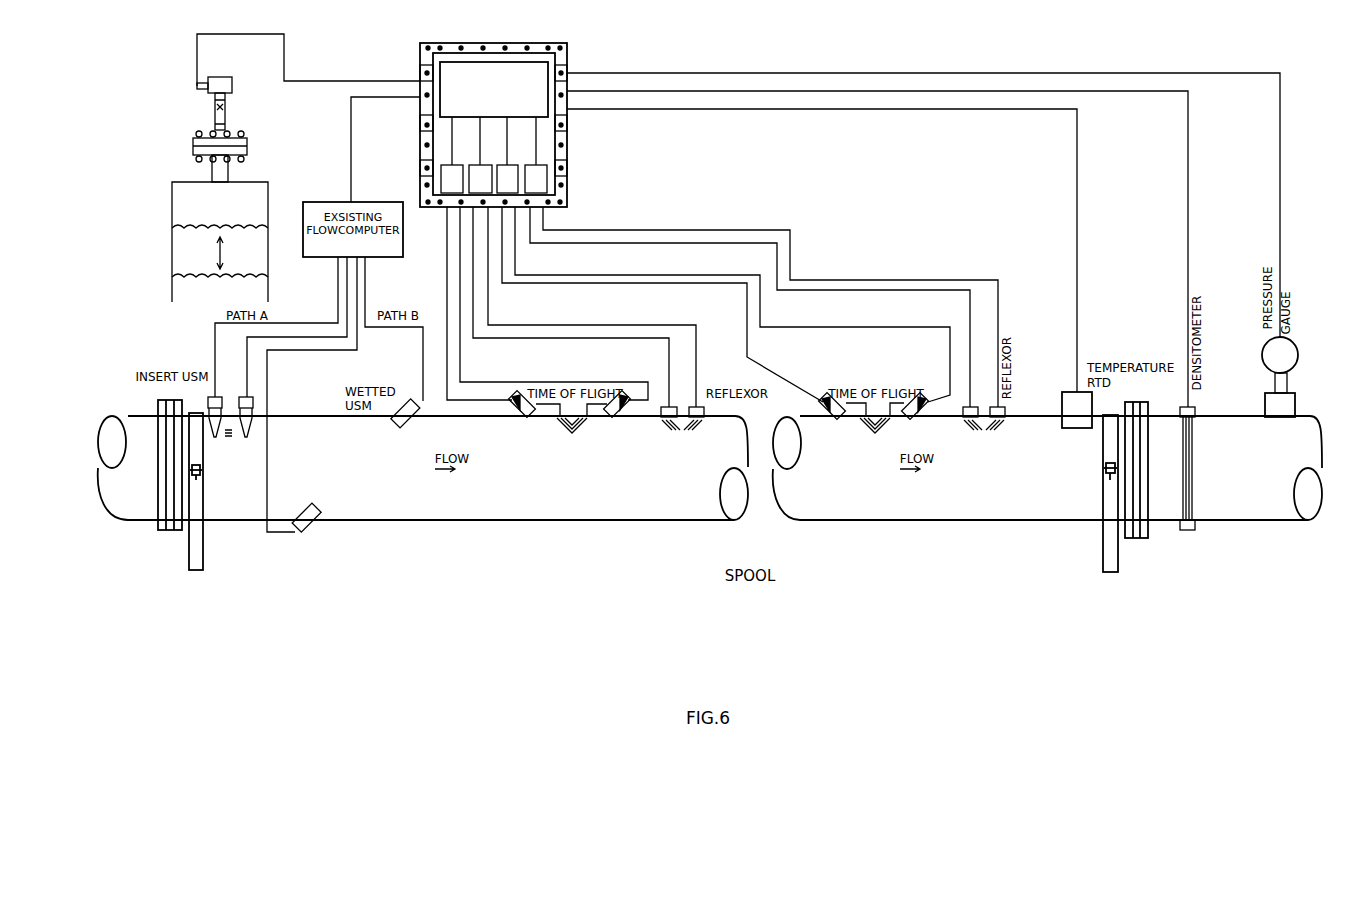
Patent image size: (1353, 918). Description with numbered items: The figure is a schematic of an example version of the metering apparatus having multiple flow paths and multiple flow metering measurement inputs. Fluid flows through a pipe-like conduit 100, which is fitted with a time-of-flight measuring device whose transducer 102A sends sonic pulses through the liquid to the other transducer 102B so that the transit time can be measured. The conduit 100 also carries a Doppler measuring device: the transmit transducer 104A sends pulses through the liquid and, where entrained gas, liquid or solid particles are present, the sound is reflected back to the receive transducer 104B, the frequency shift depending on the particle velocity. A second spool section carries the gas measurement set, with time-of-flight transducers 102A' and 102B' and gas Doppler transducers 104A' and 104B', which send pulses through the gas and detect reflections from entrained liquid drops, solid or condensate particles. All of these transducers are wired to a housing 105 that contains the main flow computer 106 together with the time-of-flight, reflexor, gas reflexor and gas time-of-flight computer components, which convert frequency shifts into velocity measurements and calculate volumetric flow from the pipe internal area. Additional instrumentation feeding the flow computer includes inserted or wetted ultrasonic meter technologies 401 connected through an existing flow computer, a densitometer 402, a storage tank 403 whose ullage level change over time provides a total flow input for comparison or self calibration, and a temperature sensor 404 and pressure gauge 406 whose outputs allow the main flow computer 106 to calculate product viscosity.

The conduit 100 is at (1048, 505).
The TOF transducer 102A is at (508, 473).
The TOF transducer 102B is at (573, 473).
The transmit transducer 104A is at (629, 481).
The receive transducer 104B is at (665, 481).
The TOF transducer 102A' is at (809, 474).
The TOF transducer 102B' is at (871, 474).
The gas Doppler transmit transducer 104A' is at (927, 481).
The gas Doppler receive transducer 104B' is at (966, 481).
The housing 105 is at (514, 125).
The main flow computer 106 is at (536, 115).
The USM technologies 401 is at (397, 428).
The densitometer 402 is at (1190, 532).
The storage tank 403 is at (185, 248).
The temperature sensor 404 is at (1075, 400).
The pressure gauge 406 is at (1278, 358).